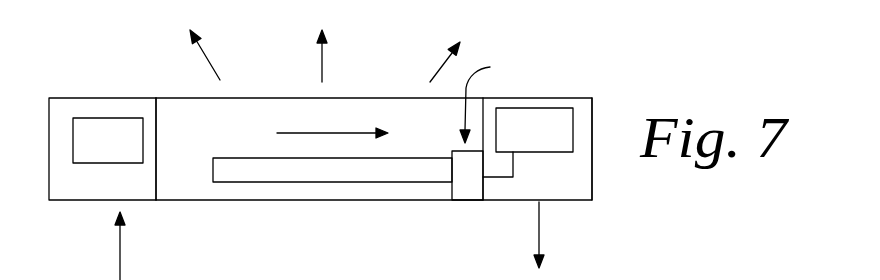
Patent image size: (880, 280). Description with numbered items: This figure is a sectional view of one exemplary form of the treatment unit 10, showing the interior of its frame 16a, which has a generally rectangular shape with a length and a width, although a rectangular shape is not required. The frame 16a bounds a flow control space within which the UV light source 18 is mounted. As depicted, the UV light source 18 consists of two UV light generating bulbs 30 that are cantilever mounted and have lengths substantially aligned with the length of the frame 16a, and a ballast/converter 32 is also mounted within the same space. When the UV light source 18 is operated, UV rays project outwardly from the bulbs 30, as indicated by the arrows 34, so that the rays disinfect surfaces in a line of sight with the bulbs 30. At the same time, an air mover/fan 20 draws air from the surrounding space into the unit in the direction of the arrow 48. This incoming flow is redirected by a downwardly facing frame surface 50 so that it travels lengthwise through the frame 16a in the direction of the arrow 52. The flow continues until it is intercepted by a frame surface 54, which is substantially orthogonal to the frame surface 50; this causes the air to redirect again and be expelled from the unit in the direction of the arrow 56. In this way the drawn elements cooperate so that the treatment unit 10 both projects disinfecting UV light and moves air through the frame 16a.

The treatment unit 10 is at (626, 91).
The frame 16a is at (610, 173).
The UV light source 18 is at (488, 96).
The air mover/fan 20 is at (115, 140).
The UV light generating bulbs 30 is at (395, 168).
The ballast/converter 32 is at (533, 125).
The arrows 34 is at (208, 59).
The arrow 48 is at (120, 245).
The downwardly facing frame surface 50 is at (222, 100).
The arrow 52 is at (333, 133).
The frame surface 54 is at (585, 143).
The arrow 56 is at (539, 226).